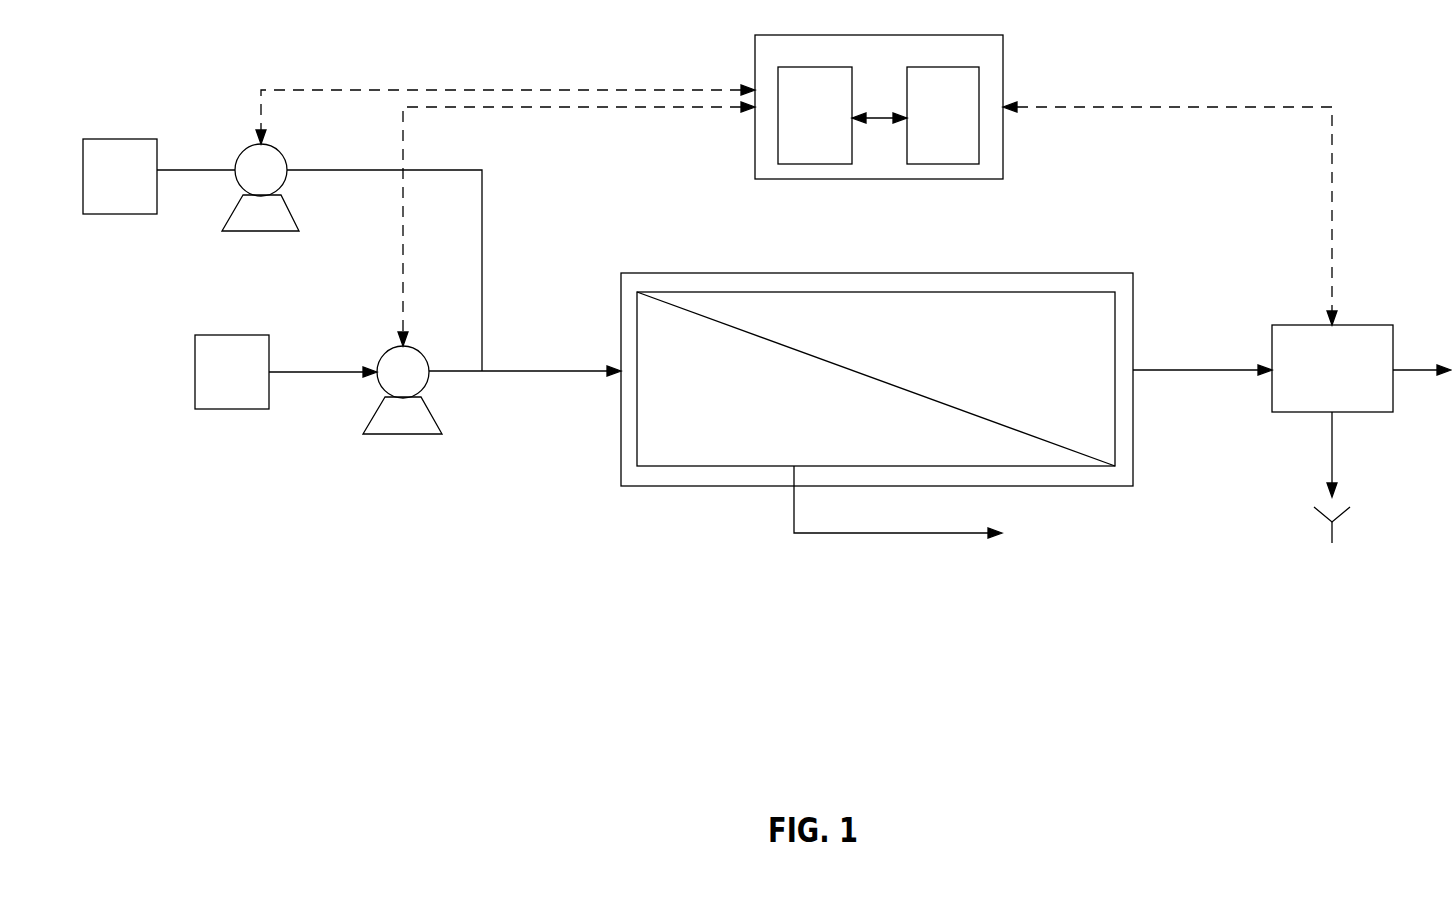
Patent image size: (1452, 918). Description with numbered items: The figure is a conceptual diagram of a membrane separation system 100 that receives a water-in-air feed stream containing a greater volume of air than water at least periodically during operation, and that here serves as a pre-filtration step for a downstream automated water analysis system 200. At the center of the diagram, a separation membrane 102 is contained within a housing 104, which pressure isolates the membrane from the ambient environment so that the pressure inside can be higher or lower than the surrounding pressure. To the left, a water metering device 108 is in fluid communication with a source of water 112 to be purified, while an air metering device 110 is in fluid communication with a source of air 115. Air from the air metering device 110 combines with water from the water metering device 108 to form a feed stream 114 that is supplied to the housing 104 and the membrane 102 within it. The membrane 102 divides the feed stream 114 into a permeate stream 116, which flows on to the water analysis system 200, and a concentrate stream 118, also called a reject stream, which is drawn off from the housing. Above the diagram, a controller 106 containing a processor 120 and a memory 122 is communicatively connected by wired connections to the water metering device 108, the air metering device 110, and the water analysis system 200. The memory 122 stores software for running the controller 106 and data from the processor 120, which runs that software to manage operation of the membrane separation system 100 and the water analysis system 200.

The membrane separation system 100 is at (1356, 134).
The separation membrane 102 is at (1070, 292).
The housing 104 is at (831, 273).
The controller 106 is at (1005, 42).
The water metering device 108 is at (402, 390).
The air metering device 110 is at (260, 187).
The source of water 112 is at (232, 372).
The feed stream 114 is at (536, 371).
The source of air 115 is at (120, 176).
The permeate stream 116 is at (1212, 370).
The concentrate stream 118 is at (794, 516).
The processor 120 is at (815, 115).
The memory 122 is at (943, 115).
The water analysis system 200 is at (1409, 311).